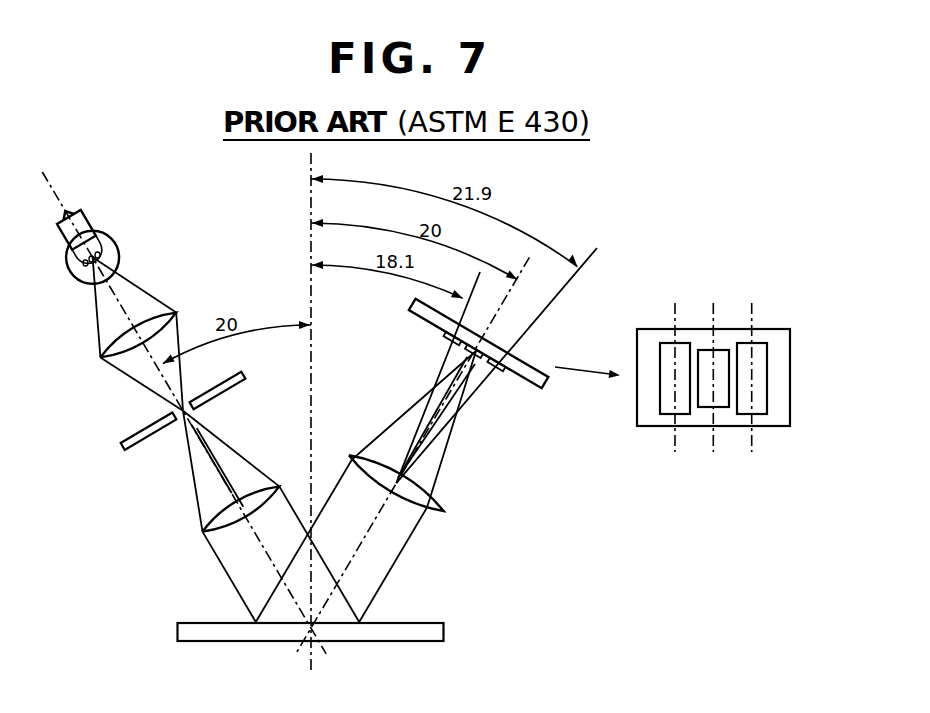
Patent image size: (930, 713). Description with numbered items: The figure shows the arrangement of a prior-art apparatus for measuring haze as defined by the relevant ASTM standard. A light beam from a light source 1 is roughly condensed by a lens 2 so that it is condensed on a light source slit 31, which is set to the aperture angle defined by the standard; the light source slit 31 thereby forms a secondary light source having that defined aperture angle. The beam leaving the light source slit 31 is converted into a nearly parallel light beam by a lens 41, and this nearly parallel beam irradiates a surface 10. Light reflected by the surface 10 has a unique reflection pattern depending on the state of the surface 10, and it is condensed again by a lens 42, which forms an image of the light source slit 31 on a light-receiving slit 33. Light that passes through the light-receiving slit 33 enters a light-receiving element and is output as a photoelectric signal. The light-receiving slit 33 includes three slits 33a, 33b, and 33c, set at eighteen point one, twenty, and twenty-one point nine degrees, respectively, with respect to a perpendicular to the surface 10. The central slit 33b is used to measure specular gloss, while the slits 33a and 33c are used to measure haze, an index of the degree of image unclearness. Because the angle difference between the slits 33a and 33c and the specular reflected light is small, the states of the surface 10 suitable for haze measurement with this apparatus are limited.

The light source 1 is at (60, 241).
The lens 2 is at (100, 338).
The light source slit 31 is at (122, 447).
The lens 41 is at (208, 517).
The lens 42 is at (444, 510).
The light-receiving slit 33 is at (528, 389).
The slit 33a is at (668, 415).
The slit 33b is at (718, 350).
The slit 33c is at (758, 415).
The surface 10 is at (408, 622).